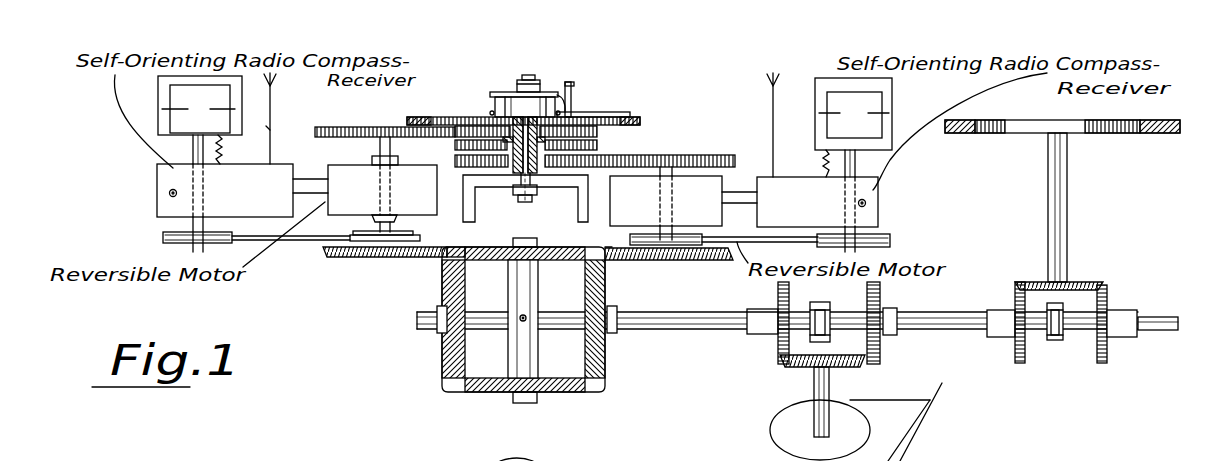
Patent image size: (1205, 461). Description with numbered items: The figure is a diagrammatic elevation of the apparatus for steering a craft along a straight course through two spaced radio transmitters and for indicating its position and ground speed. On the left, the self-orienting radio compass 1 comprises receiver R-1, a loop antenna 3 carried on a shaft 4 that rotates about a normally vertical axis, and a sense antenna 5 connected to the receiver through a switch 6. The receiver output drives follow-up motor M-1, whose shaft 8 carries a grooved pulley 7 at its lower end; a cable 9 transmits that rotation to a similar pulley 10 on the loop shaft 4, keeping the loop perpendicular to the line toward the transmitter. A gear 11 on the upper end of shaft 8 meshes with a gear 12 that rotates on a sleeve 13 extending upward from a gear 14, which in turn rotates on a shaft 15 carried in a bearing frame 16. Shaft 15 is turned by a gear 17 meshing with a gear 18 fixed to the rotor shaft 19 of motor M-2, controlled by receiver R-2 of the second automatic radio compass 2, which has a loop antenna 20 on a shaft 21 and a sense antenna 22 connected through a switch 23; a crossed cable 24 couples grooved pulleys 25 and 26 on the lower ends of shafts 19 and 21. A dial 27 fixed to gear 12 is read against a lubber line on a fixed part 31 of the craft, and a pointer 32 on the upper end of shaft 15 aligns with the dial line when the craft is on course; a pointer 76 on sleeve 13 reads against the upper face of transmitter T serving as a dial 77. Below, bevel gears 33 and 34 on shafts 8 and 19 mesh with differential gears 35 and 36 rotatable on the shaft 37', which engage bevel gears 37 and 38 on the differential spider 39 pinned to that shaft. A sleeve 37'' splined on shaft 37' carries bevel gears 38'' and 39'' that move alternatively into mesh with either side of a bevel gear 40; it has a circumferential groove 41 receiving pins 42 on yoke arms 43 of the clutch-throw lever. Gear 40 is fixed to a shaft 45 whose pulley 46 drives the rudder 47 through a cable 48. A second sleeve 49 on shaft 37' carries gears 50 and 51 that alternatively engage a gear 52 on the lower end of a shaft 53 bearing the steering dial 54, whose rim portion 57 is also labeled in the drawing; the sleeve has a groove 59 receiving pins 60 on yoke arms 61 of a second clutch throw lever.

The compass 1 is at (130, 162).
The automatic radio compass 2 is at (900, 165).
The loop antenna 3 is at (200, 105).
The shaft 4 is at (192, 153).
The sense antenna 5 is at (282, 118).
The switch 6 is at (271, 129).
The grooved pulley 7 is at (352, 232).
The motor shaft 8 is at (378, 146).
The cable 9 is at (268, 240).
The pulley 10 is at (165, 235).
The gear 11 is at (327, 130).
The gear 12 is at (598, 131).
The sleeve 13 is at (456, 146).
The gear 14 is at (600, 147).
The shaft 15 is at (540, 80).
The bearing frame 16 is at (493, 180).
The gear 17 is at (456, 161).
The gear 18 is at (702, 155).
The rotor shaft 19 is at (665, 156).
The loop antenna 20 is at (853, 114).
The shaft 21 is at (856, 160).
The sense antenna 22 is at (768, 85).
The switch 23 is at (774, 138).
The crossed cable 24 is at (704, 225).
The grooved pulley 25 is at (612, 246).
The grooved pulley 26 is at (885, 236).
The dial 27 is at (469, 126).
The fixed part 31 is at (422, 117).
The pointer 32 is at (585, 113).
The bevel gear 33 is at (348, 259).
The bevel gear 34 is at (680, 262).
The differential gear 35 is at (442, 287).
The differential gear 36 is at (605, 284).
The bevel gear 37 is at (523, 313).
The shaft 37' is at (770, 324).
The sleeve 37'' is at (745, 300).
The bevel gear 38 is at (561, 367).
The bevel gear 38'' is at (743, 332).
The differential spider 39 is at (539, 319).
The bevel gear 39'' is at (916, 348).
The bevel gear 40 is at (790, 368).
The circumferential groove 41 is at (832, 312).
The pins 42 is at (830, 340).
The yoke arms 43 is at (818, 303).
The shaft 45 is at (830, 385).
The pulley 46 is at (785, 412).
The rudder 47 is at (922, 435).
The cable 48 is at (896, 415).
The second sleeve 49 is at (988, 336).
The gear 50 is at (1014, 300).
The gear 51 is at (1108, 301).
The gear 52 is at (1079, 282).
The shaft 53 is at (1068, 187).
The steering dial 54 is at (1085, 121).
The disc rim 57 is at (968, 121).
The circumferential groove 59 is at (1061, 340).
The pins 60 is at (1063, 306).
The yoke arms 61 is at (1051, 341).
The pointer 76 is at (498, 92).
The dial 77 is at (573, 92).